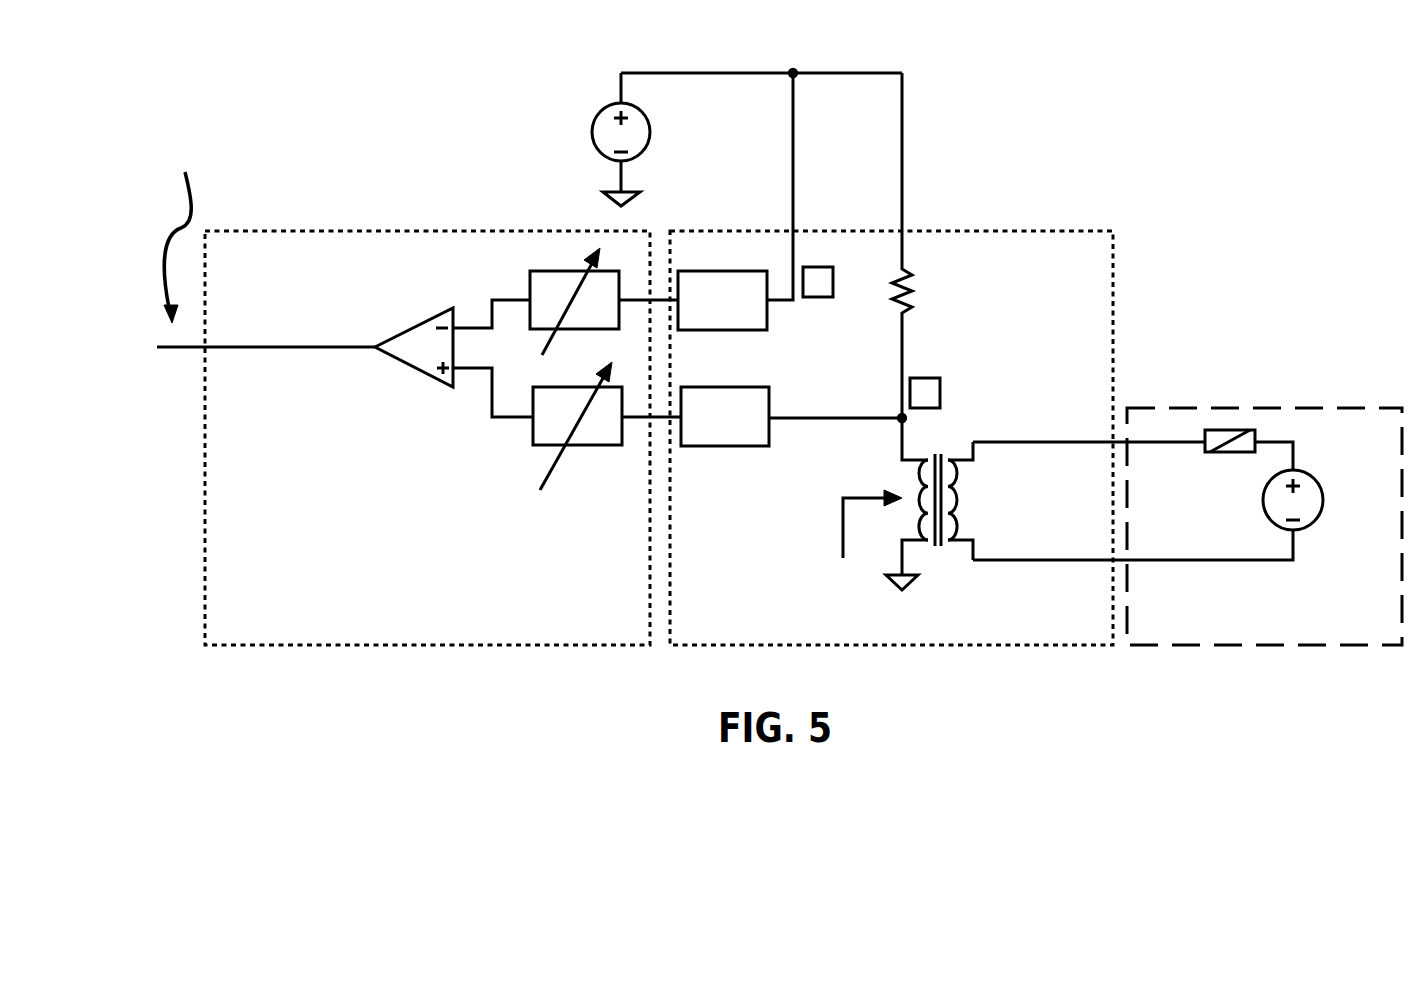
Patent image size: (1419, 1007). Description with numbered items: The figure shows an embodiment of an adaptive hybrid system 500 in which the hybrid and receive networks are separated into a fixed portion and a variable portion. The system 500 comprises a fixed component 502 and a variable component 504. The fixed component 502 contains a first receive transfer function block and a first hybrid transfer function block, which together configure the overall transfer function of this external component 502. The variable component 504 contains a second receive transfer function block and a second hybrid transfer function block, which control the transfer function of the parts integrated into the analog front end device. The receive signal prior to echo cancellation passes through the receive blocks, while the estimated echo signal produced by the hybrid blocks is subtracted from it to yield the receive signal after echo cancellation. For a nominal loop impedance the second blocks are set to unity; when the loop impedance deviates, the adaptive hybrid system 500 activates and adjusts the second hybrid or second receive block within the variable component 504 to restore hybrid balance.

The adaptive hybrid system 500 is at (1138, 84).
The fixed component 502 is at (955, 231).
The variable component 504 is at (404, 231).